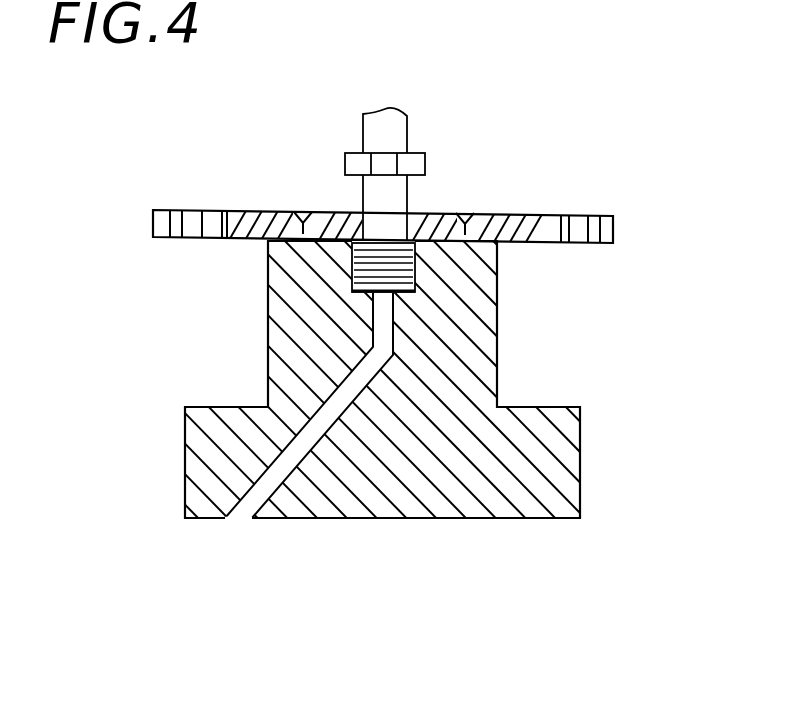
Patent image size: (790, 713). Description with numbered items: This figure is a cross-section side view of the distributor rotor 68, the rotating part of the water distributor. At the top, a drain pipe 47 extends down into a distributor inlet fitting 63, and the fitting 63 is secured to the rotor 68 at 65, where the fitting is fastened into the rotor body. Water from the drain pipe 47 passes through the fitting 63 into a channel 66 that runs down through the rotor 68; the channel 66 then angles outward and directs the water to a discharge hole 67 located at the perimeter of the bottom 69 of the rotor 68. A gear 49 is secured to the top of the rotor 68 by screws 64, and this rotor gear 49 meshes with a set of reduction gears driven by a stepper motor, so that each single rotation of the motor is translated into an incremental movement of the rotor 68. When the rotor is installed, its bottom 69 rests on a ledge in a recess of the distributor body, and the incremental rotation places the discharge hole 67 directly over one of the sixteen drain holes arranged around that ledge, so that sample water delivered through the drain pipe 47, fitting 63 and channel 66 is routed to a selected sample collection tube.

The drain pipe 47 is at (407, 127).
The gear 49 is at (614, 230).
The distributor inlet fitting 63 is at (343, 162).
The screws 64 is at (463, 216).
The fitting securing location 65 is at (415, 272).
The channel 66 is at (393, 320).
The discharge hole 67 is at (238, 518).
The distributor rotor 68 is at (580, 463).
The bottom 69 is at (485, 522).